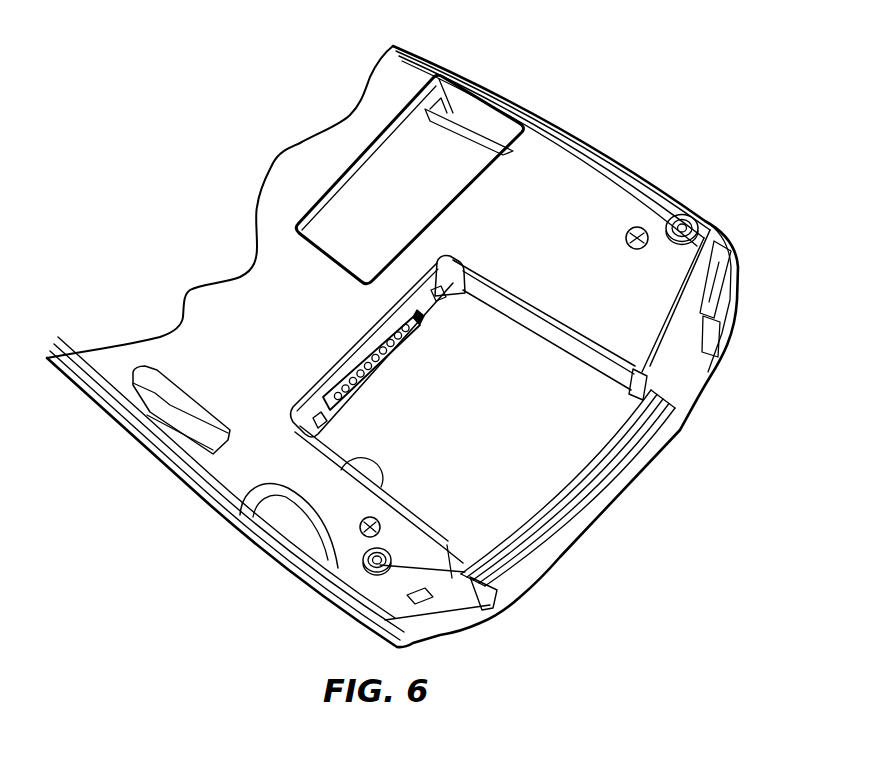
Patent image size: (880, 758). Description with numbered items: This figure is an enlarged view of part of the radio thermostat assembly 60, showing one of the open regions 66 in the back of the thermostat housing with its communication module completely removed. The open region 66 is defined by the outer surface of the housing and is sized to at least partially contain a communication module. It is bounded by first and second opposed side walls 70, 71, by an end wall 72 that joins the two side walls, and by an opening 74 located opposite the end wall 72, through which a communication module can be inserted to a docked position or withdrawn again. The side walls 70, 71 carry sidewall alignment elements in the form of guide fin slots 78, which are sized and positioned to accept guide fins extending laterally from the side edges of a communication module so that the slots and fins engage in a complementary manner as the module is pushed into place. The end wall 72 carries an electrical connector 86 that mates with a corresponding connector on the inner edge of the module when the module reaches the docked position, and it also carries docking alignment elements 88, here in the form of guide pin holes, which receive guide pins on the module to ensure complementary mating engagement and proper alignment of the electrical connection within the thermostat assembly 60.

The thermostat assembly 60 is at (497, 89).
The open region 66 is at (517, 343).
The first side wall 70 is at (505, 300).
The second side wall 71 is at (340, 470).
The end wall 72 is at (447, 257).
The opening 74 is at (508, 530).
The guide fin slots 78 is at (465, 560).
The electrical connector 86 is at (380, 328).
The docking alignment elements 88 is at (300, 428).